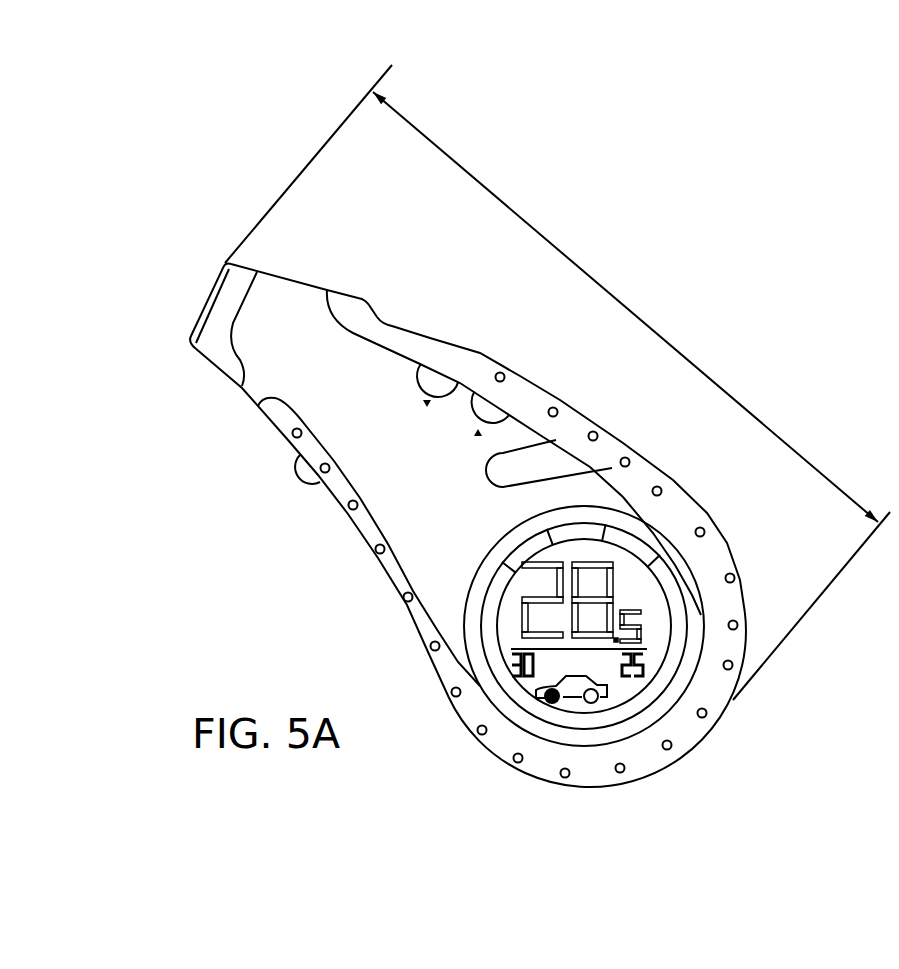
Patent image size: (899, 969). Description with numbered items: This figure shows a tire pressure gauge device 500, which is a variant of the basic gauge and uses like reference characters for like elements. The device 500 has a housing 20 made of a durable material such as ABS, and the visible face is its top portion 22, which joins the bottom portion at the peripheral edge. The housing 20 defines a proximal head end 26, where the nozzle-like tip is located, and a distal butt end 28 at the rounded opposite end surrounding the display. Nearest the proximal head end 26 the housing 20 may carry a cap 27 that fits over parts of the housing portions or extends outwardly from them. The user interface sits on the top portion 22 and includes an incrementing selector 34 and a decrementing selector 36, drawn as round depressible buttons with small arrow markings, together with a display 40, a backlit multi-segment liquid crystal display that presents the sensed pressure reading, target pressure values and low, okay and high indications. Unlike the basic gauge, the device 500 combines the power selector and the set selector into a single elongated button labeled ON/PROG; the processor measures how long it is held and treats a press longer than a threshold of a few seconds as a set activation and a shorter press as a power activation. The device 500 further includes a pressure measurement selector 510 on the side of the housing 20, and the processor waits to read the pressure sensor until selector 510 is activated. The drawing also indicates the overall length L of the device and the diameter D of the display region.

The device 500 is at (548, 177).
The housing 20 is at (378, 552).
The top portion 22 is at (407, 513).
The proximal head end 26 is at (230, 285).
The cap 27 is at (224, 357).
The distal butt end 28 is at (690, 738).
The incrementing selector 34 is at (438, 376).
The decrementing selector 36 is at (495, 413).
The display 40 is at (650, 610).
The pressure measurement selector 510 is at (307, 473).
The diameter D is at (503, 688).
The length L is at (557, 382).